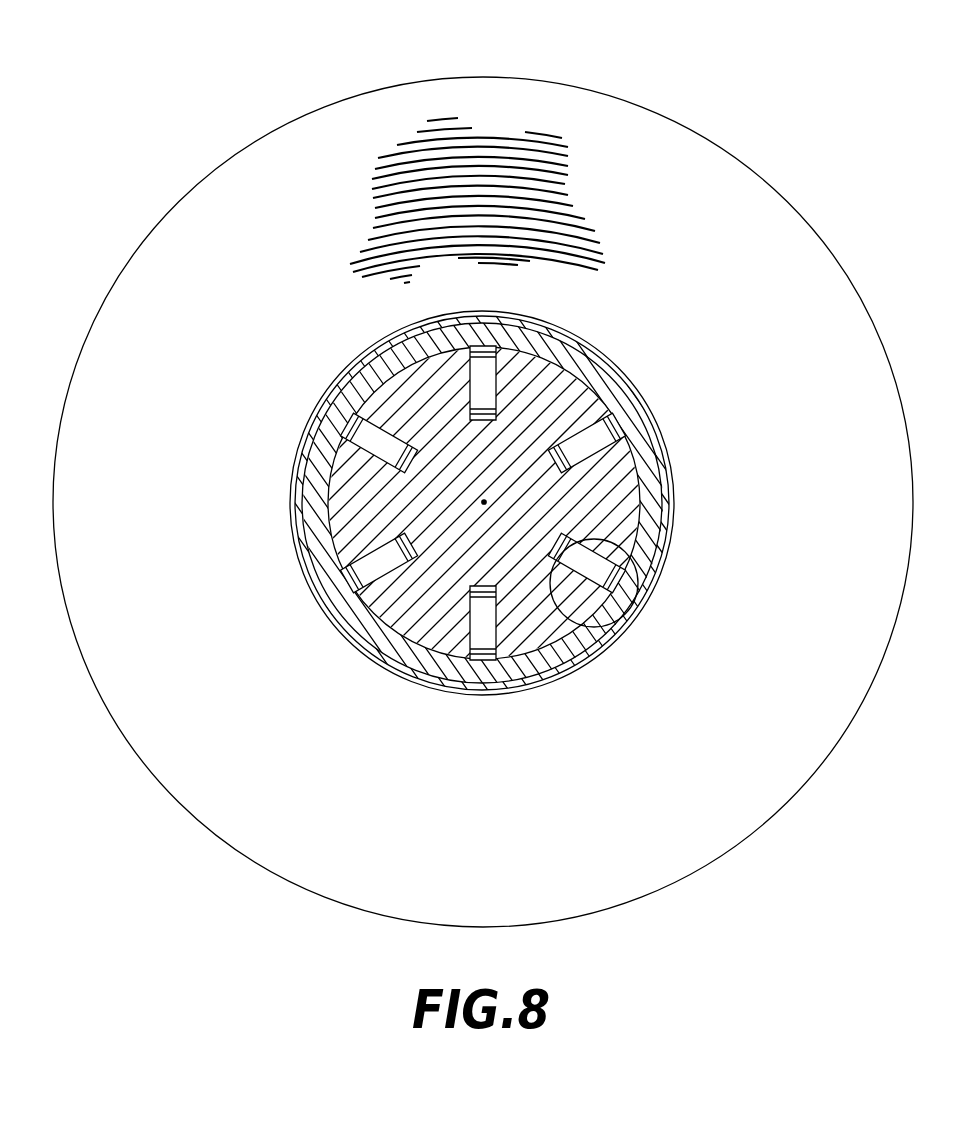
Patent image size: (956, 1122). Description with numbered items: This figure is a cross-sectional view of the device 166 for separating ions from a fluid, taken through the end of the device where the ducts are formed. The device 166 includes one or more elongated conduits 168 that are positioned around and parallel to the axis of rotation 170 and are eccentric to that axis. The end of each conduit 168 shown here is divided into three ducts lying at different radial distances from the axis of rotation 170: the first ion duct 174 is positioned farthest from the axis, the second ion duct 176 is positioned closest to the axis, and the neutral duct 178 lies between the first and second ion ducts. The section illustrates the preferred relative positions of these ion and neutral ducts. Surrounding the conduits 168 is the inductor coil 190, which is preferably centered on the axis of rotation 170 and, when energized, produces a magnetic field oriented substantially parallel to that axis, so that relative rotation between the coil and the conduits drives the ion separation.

The device 166 is at (757, 110).
The elongated conduit 168 is at (575, 540).
The axis of rotation 170 is at (484, 502).
The first ion duct 174 is at (618, 580).
The second ion duct 176 is at (598, 655).
The neutral duct 178 is at (580, 557).
The inductor coil 190 is at (488, 158).